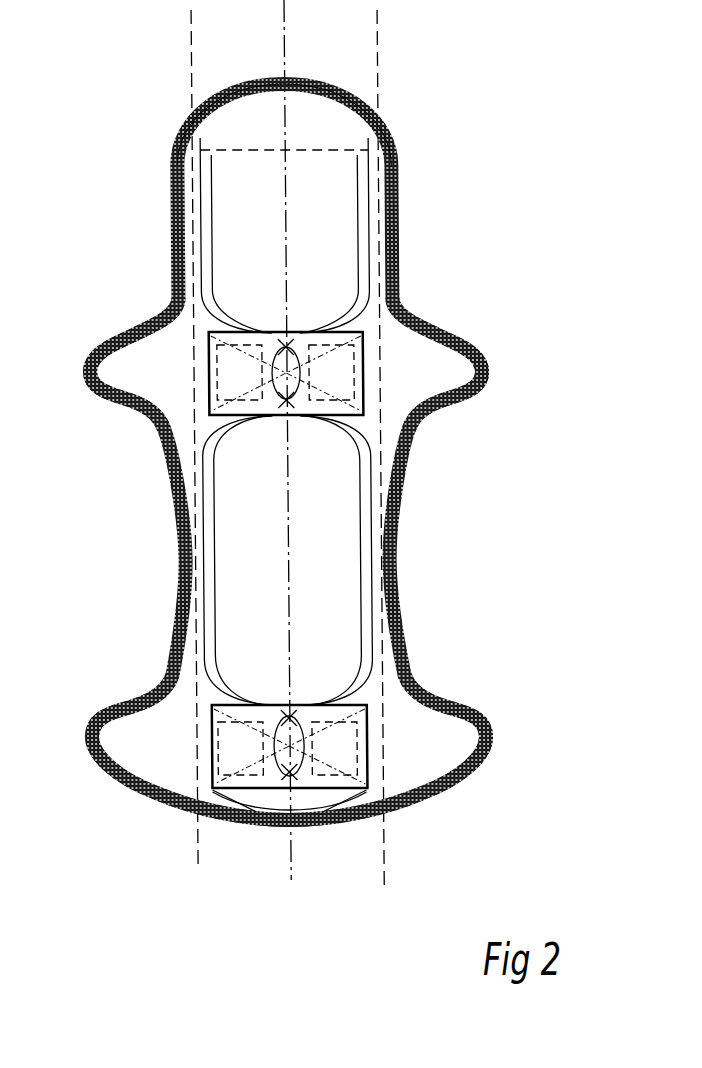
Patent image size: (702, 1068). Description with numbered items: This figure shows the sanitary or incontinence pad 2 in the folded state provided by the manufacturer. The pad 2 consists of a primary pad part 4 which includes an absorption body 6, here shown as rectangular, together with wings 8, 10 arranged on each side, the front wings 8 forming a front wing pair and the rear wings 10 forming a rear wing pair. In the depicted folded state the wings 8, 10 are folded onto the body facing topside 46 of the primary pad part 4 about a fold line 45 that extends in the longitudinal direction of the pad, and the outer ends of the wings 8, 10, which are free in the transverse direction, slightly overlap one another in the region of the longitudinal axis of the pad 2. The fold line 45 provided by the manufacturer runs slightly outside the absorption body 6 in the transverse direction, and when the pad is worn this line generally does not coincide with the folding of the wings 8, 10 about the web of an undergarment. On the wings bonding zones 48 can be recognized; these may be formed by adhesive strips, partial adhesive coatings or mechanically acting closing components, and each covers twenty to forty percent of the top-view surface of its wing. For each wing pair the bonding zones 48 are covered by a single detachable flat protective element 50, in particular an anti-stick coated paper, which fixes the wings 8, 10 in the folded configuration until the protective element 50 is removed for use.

The sanitary or incontinence pad 2 is at (108, 126).
The primary pad part 4 is at (252, 123).
The absorption body 6 is at (325, 177).
The front wing 8 is at (435, 373).
The rear wing 10 is at (443, 743).
The fold line 45 is at (397, 231).
The body facing topside 46 is at (308, 118).
The bonding zones 48 is at (240, 370).
The detachable flat protective element 50 is at (380, 305).